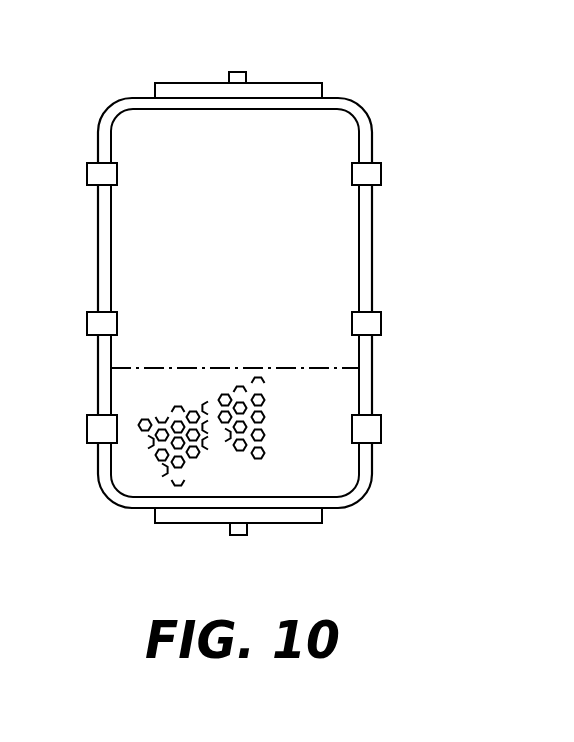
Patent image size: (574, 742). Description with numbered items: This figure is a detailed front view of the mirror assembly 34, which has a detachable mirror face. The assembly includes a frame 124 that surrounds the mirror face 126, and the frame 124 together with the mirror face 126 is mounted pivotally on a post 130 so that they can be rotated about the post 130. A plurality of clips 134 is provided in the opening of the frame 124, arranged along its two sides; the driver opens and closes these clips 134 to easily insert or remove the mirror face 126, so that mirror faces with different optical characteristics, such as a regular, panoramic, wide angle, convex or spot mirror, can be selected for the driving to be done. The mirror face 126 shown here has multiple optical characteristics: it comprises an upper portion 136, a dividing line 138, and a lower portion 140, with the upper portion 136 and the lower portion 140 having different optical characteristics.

The mirror assembly 34 is at (366, 48).
The frame 124 is at (108, 103).
The mirror face 126 is at (123, 241).
The post 130 is at (228, 536).
The clips 134 is at (388, 174).
The upper portion 136 is at (346, 268).
The dividing line 138 is at (274, 362).
The lower portion 140 is at (276, 445).